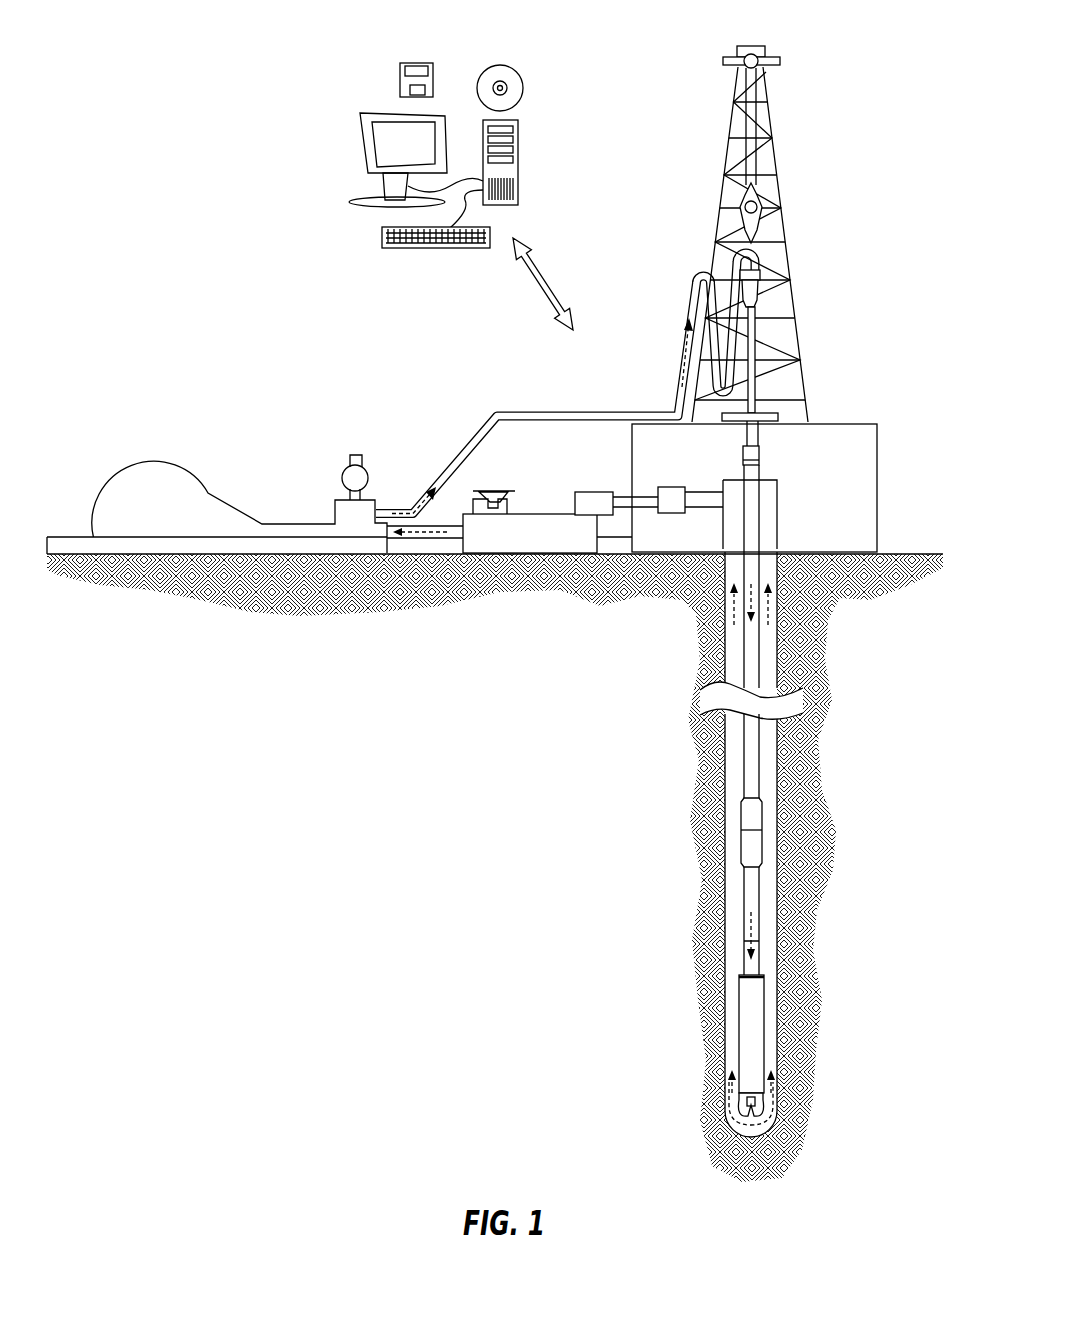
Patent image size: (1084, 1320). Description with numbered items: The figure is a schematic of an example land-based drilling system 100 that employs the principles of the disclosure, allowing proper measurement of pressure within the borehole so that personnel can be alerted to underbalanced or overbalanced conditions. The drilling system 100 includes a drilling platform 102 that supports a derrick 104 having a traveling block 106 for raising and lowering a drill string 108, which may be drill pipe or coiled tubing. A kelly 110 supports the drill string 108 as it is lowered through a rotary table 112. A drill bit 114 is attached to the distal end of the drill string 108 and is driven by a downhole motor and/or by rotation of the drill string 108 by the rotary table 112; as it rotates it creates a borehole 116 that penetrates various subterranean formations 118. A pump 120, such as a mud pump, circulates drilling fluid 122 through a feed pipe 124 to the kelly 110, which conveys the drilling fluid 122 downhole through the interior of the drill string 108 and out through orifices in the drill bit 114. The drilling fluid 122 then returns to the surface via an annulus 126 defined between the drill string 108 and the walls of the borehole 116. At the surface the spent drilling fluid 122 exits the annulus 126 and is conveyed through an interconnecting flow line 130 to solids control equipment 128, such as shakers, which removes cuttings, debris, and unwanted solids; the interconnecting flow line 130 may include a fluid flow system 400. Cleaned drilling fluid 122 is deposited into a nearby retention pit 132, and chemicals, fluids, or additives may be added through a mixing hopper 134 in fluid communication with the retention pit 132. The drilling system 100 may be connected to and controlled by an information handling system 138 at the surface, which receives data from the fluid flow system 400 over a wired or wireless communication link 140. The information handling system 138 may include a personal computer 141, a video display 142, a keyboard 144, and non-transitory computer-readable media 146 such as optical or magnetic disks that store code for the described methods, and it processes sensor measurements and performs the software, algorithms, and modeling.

The drilling system 100 is at (202, 115).
The drilling platform 102 is at (877, 432).
The derrick 104 is at (780, 157).
The traveling block 106 is at (762, 203).
The drill string 108 is at (755, 648).
The kelly 110 is at (755, 325).
The rotary table 112 is at (783, 418).
The drill bit 114 is at (767, 1118).
The borehole 116 is at (778, 765).
The subterranean formations 118 is at (653, 821).
The pump 120 is at (173, 519).
The drilling fluid 122 is at (408, 513).
The feed pipe 124 is at (515, 418).
The annulus 126 is at (770, 1043).
The solids control equipment 128 is at (594, 498).
The interconnecting flow line 130 is at (713, 507).
The retention pit 132 is at (523, 542).
The mixing hopper 134 is at (493, 490).
The information handling system 138 is at (433, 160).
The communication link 140 is at (553, 282).
The personal computer 141 is at (520, 132).
The video display 142 is at (365, 150).
The keyboard 144 is at (405, 250).
The non-transitory computer-readable media 146 is at (461, 55).
The fluid flow system 400 is at (670, 487).